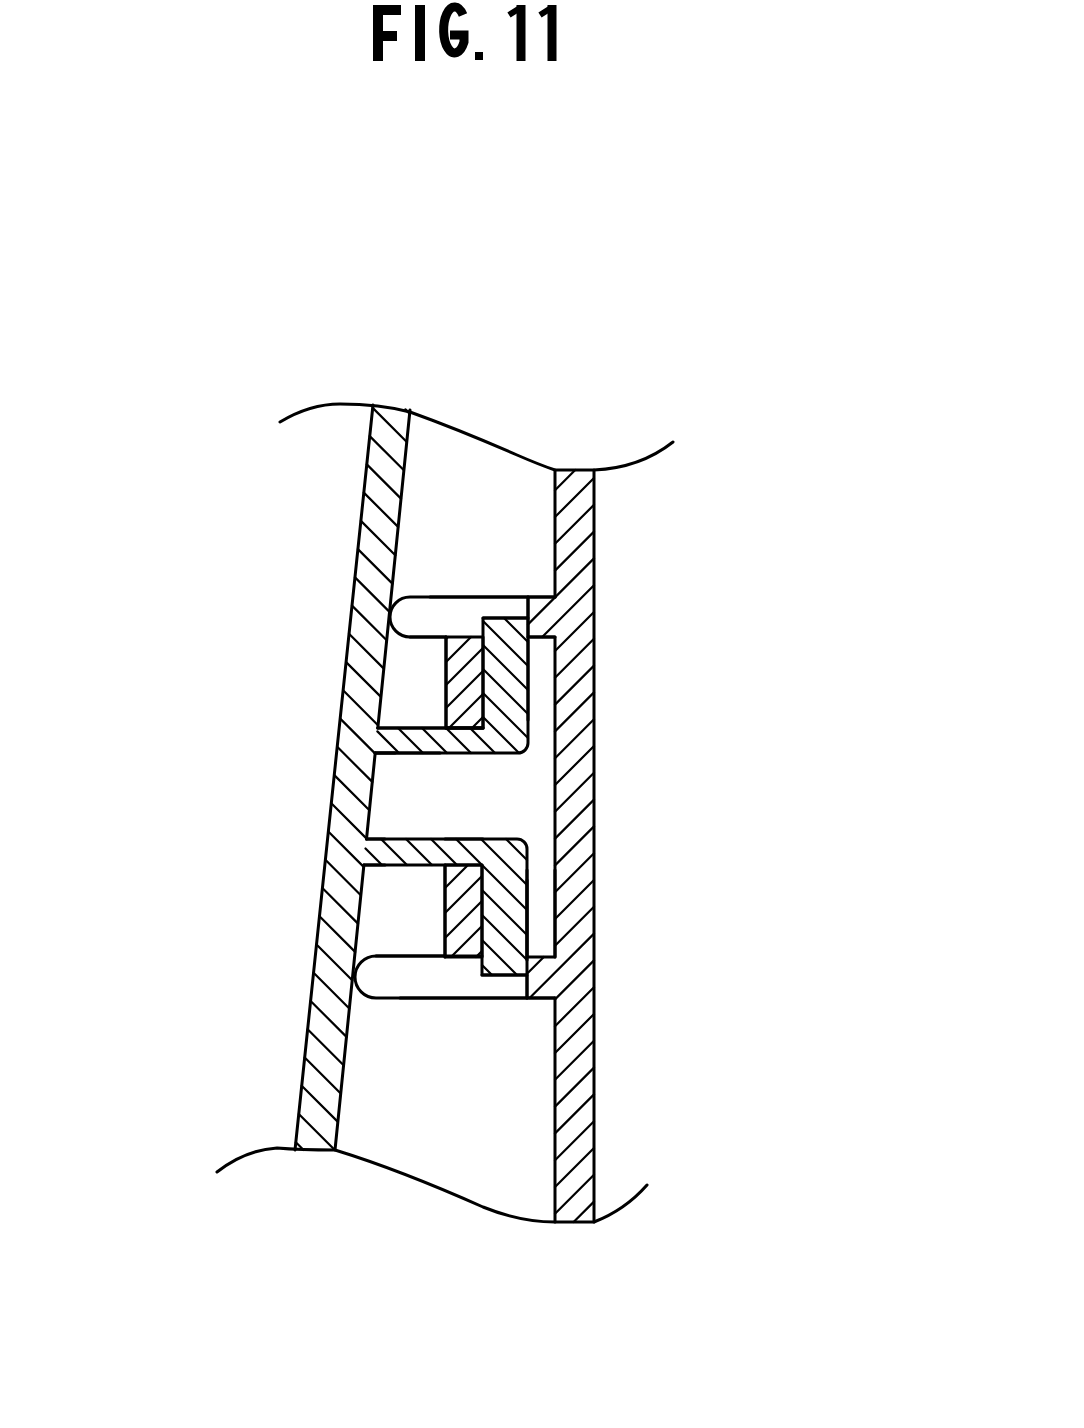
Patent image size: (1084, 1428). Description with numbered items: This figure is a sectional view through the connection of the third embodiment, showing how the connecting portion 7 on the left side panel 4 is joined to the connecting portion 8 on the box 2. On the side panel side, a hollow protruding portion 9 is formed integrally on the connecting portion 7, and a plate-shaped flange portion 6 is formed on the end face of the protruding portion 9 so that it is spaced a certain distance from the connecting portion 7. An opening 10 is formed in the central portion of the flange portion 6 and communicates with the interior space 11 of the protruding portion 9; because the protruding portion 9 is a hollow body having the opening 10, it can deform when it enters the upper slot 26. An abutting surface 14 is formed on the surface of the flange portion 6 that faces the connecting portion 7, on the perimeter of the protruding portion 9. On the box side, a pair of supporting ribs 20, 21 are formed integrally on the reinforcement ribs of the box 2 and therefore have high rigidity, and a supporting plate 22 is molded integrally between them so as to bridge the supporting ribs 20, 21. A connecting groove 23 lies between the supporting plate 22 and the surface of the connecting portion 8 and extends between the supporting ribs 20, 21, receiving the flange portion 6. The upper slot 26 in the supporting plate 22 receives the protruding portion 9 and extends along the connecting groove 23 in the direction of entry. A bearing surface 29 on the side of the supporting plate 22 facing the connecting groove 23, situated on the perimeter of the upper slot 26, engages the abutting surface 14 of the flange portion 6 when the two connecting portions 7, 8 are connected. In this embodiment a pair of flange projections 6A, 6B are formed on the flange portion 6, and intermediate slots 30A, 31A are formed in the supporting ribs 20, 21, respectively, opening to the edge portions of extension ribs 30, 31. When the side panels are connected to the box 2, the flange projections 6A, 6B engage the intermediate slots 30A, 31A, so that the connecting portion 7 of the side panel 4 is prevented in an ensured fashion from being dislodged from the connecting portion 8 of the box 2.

The box 2 is at (580, 530).
The left side panel 4 is at (377, 492).
The plate-shaped flange portion 6 is at (508, 692).
The flange projection 6A is at (508, 615).
The flange projection 6B is at (508, 978).
The connecting portion 7 is at (413, 722).
The connecting portion 8 is at (537, 590).
The hollow protruding portion 9 is at (382, 757).
The opening 10 is at (500, 790).
The interior space 11 is at (413, 795).
The abutting surface 14 is at (470, 895).
The supporting rib 20 is at (473, 590).
The supporting rib 21 is at (493, 1005).
The supporting plate 22 is at (220, 998).
The connecting groove 23 is at (542, 907).
The upper slot 26 is at (465, 738).
The bearing surface 29 is at (496, 670).
The extension rib 30 is at (413, 590).
The intermediate slot 30A is at (450, 613).
The extension rib 31 is at (386, 1005).
The intermediate slot 31A is at (432, 980).